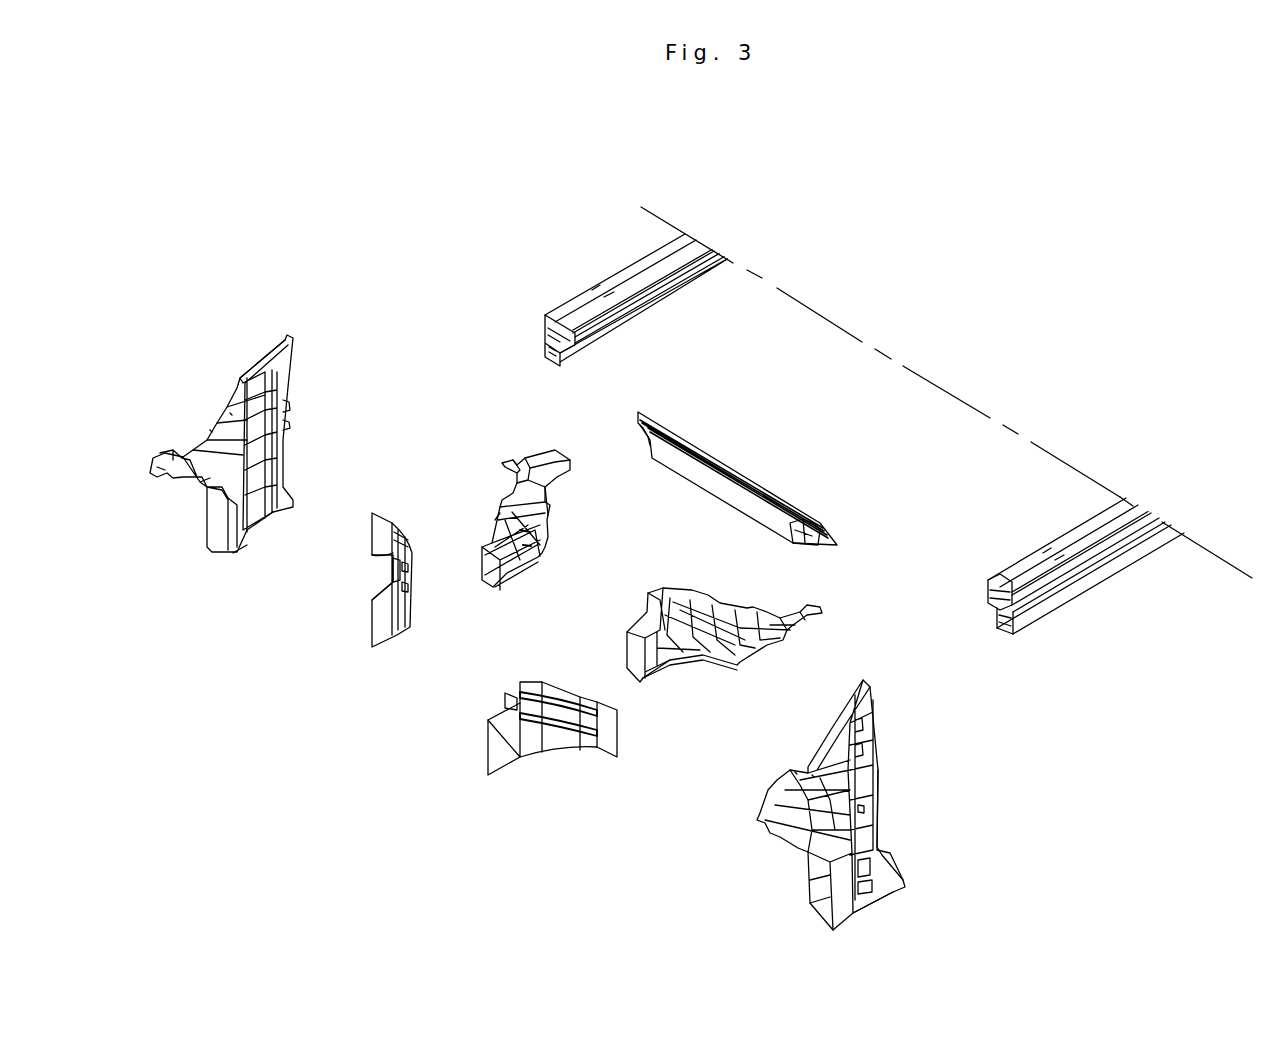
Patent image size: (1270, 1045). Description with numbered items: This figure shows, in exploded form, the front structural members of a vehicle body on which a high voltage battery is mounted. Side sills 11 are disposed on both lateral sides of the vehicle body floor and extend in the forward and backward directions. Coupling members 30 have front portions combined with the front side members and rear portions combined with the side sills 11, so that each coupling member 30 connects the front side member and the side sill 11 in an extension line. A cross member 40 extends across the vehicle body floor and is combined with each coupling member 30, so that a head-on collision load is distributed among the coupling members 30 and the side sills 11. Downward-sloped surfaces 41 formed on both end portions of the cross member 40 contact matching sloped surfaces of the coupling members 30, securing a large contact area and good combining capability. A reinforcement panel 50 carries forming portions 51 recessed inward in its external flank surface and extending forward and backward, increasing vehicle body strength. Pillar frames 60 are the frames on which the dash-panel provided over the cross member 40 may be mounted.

The side sill 11 is at (588, 312).
The coupling member 30 is at (523, 458).
The cross member 40 is at (750, 465).
The downward-sloped surface 41 is at (810, 537).
The reinforcement panel 50 is at (488, 679).
The forming portion 51 is at (577, 704).
The pillar frame 60 is at (213, 433).